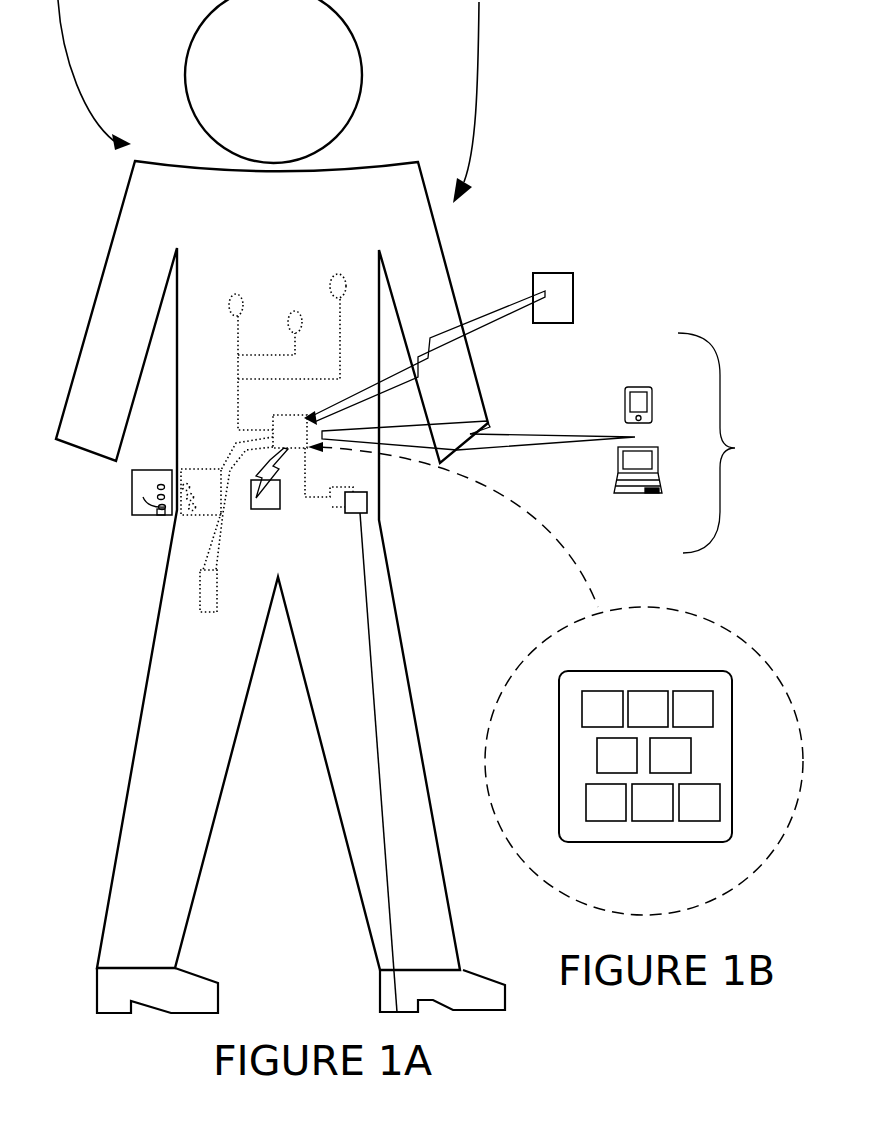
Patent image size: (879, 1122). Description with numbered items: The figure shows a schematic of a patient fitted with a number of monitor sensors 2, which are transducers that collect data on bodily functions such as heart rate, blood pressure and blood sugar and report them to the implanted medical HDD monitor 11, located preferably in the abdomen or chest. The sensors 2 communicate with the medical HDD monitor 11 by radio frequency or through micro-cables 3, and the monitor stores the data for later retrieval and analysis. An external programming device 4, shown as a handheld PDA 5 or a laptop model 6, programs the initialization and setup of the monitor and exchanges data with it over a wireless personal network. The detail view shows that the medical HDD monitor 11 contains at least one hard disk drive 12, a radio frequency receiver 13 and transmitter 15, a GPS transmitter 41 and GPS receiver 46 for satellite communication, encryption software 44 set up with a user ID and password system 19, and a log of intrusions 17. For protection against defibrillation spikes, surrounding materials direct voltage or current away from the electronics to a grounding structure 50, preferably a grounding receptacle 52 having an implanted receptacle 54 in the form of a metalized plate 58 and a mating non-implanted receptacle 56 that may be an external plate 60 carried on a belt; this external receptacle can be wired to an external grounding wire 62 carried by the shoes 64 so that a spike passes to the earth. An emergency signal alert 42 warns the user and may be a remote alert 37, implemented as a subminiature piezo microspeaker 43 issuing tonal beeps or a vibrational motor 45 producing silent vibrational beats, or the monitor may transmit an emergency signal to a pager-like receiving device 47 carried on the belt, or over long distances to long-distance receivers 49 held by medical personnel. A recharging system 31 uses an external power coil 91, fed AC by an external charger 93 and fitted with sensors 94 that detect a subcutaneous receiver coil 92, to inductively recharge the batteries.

In FIG. 1A, the monitor sensors 2 is at (294, 310).
In FIG. 1A, the micro-cables 3 is at (237, 338).
In FIG. 1A, the external programming device 4 is at (689, 443).
In FIG. 1A, the handheld (PDA) 5 is at (652, 407).
In FIG. 1A, the laptop model 6 is at (658, 470).
In FIG. 1A, the medical HDD monitor 11 is at (333, 426).
In FIG. 1B, the medical HDD monitor 11 is at (613, 714).
In FIG. 1B, the hard disk drive (HDD) 12 is at (591, 719).
In FIG. 1B, the radio frequency receiver 13 is at (636, 719).
In FIG. 1B, the transmitter 15 is at (681, 719).
In FIG. 1B, the log of intrusions 17 is at (605, 766).
In FIG. 1B, the user ID and password system 19 is at (658, 766).
In FIG. 1A, the recharging system 31 is at (143, 560).
In FIG. 1A, the remote alert 37 is at (219, 576).
In FIG. 1B, the GPS transmitter 41 is at (594, 813).
In FIG. 1A, the emergency signal alert 42 is at (219, 576).
In FIG. 1A, the subminiature piezo microspeaker 43 is at (219, 576).
In FIG. 1B, the encryption software 44 is at (640, 813).
In FIG. 1A, the vibrational motor 45 is at (199, 590).
In FIG. 1B, the GPS receiver 46 is at (687, 813).
In FIG. 1A, the receiving device 47 is at (251, 494).
In FIG. 1A, the long-distance receivers 49 is at (553, 312).
In FIG. 1A, the grounding structure 50 is at (439, 526).
In FIG. 1A, the grounding receptacle 52 is at (439, 526).
In FIG. 1A, the implanted receptacle 54 is at (317, 507).
In FIG. 1A, the non-implanted receptacle 56 is at (402, 527).
In FIG. 1A, the metalized plate 58 is at (332, 507).
In FIG. 1A, the external plate 60 is at (367, 506).
In FIG. 1A, the external grounding wire 62 is at (362, 571).
In FIG. 1A, the shoes 64 is at (380, 1011).
In FIG. 1A, the external power coil 91 is at (168, 500).
In FIG. 1A, the receiver coil 92 is at (188, 459).
In FIG. 1A, the external charger 93 is at (143, 497).
In FIG. 1A, the sensors 94 is at (160, 518).